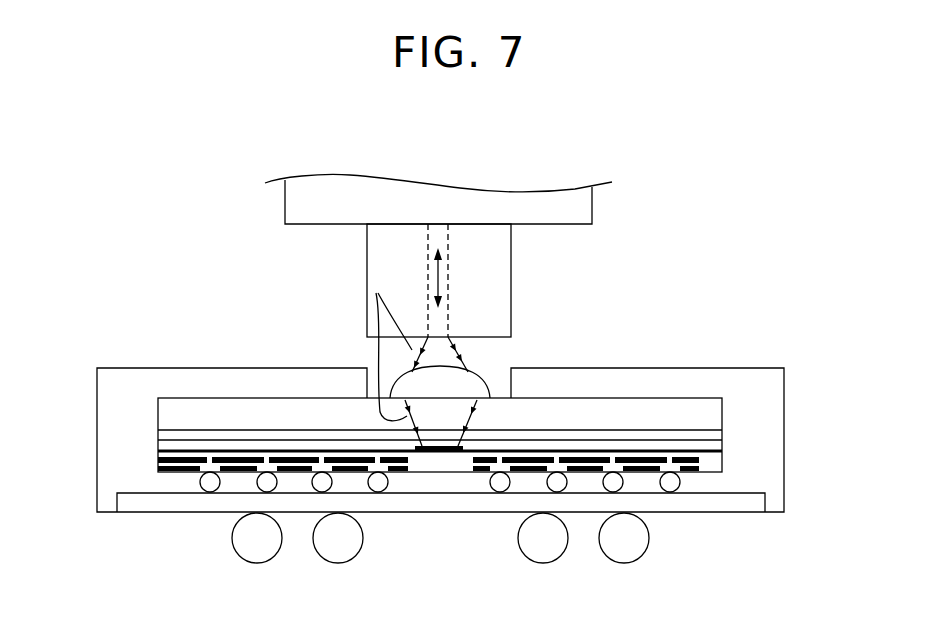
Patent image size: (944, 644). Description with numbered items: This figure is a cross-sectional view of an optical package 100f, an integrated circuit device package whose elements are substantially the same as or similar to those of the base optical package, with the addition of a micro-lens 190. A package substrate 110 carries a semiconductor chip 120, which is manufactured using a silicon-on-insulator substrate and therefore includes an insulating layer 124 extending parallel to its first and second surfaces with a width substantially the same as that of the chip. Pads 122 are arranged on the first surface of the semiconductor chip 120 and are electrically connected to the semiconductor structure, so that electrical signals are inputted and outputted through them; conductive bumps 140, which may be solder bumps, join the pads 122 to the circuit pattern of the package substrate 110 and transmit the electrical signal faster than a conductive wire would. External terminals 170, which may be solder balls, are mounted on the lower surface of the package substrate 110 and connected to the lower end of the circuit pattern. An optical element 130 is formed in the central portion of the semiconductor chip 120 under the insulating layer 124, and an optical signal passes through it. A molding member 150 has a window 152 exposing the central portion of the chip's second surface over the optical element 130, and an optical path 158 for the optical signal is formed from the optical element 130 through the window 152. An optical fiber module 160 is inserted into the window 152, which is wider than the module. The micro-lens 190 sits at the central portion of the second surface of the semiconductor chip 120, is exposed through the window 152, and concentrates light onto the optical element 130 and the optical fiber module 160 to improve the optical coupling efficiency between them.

The optical package 100f is at (462, 149).
The package substrate 110 is at (757, 502).
The semiconductor chip 120 is at (715, 408).
The pads 122 is at (180, 455).
The insulating layer 124 is at (715, 435).
The optical element 130 is at (436, 453).
The conductive bumps 140 is at (675, 484).
The molding member 150 is at (770, 383).
The window 152 is at (500, 378).
The optical path 158 is at (428, 276).
The optical fiber module 160 is at (367, 268).
The external terminals 170 is at (635, 543).
The micro-lens 190 is at (473, 386).